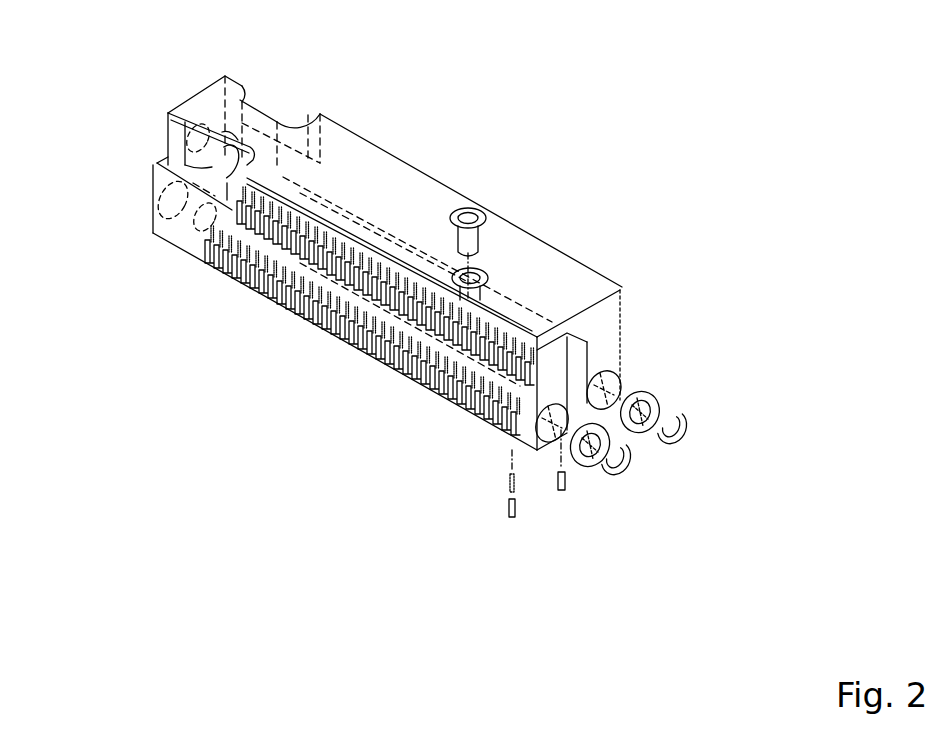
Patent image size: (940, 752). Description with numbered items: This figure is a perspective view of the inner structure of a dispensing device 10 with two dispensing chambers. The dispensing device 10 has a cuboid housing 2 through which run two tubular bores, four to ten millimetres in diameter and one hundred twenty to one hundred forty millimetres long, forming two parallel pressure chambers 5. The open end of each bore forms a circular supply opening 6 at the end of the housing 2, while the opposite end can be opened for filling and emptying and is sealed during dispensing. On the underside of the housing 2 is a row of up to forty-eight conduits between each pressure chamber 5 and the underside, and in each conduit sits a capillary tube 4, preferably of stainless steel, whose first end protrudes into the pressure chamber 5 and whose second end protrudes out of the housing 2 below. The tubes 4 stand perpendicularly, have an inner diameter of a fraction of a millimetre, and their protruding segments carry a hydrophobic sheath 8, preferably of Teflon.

The housing 2 is at (360, 167).
The capillary tube 4 is at (272, 295).
The pressure chamber 5 is at (380, 308).
The supply opening 6 is at (566, 410).
The sheath 8 is at (520, 510).
The dispensing device 10 is at (676, 108).